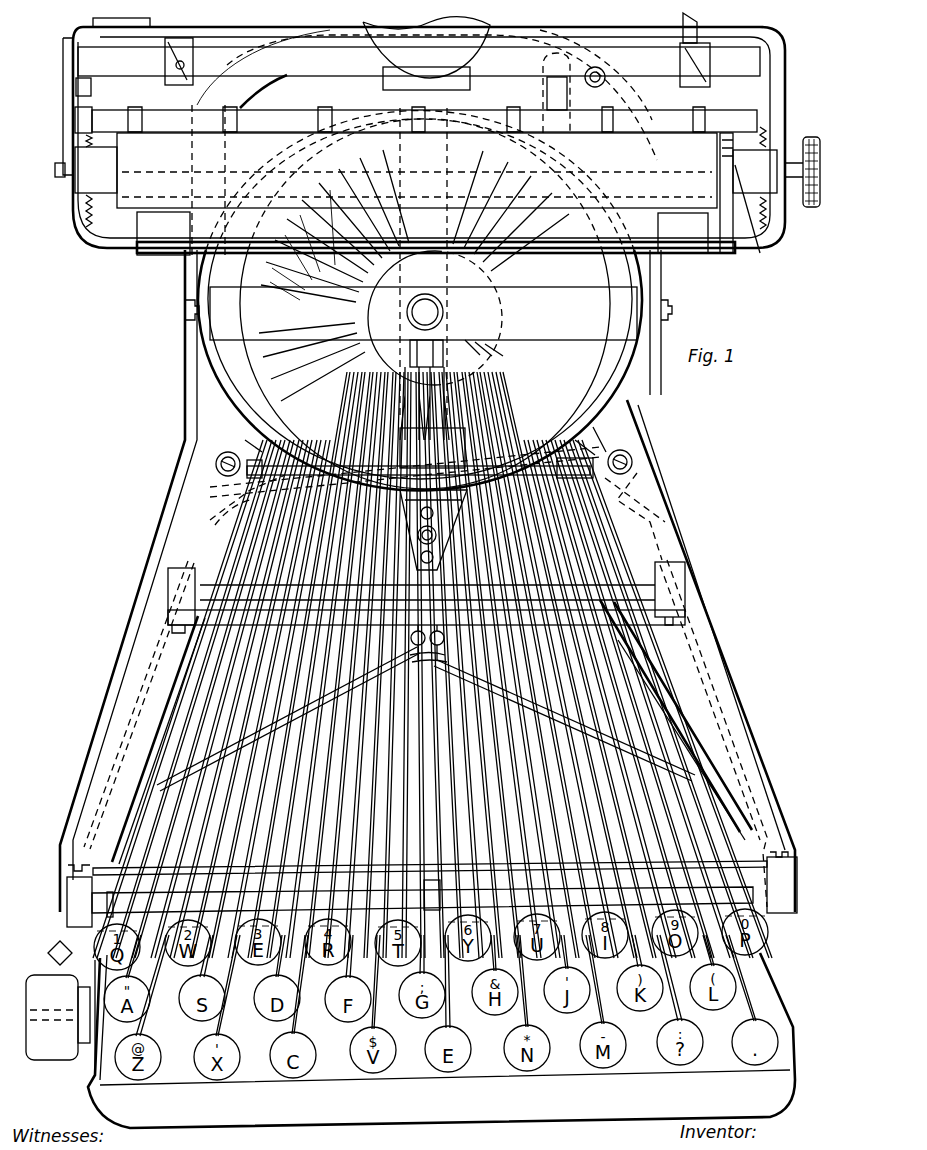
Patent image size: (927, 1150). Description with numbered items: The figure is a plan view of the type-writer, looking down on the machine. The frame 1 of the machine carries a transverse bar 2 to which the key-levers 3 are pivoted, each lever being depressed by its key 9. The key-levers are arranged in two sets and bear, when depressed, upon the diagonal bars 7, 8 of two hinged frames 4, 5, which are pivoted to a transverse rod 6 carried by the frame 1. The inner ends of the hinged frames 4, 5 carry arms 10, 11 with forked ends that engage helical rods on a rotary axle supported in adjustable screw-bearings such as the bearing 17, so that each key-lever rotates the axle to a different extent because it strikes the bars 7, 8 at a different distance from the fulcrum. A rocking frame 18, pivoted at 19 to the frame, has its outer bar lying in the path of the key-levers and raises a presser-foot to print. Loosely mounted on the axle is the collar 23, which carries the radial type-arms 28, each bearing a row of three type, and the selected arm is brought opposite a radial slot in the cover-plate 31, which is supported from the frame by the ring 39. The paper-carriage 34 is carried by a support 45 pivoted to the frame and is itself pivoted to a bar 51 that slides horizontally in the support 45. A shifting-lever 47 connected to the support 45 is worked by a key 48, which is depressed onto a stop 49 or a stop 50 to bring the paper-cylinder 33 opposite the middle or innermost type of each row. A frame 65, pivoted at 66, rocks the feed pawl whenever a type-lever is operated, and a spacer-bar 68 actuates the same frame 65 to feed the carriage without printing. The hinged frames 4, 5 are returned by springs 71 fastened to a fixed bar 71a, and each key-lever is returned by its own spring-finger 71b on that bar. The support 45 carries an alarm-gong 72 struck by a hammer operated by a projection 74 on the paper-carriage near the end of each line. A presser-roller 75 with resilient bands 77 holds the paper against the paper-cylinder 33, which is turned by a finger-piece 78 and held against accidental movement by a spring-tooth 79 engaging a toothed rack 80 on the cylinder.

The frame 1 is at (700, 625).
The transverse bar 2 is at (666, 562).
The key-levers 3 is at (713, 843).
The hinged frame 4 is at (713, 763).
The hinged frame 5 is at (145, 818).
The transverse rod 6 is at (732, 893).
The diagonal bar 7 is at (667, 753).
The diagonal bar 8 is at (210, 755).
The keys 9 is at (345, 1063).
The arm 10 is at (448, 403).
The arm 11 is at (412, 403).
The adjustable screw-bearing 17 is at (443, 312).
The rocking frame 18 is at (441, 464).
The pivot 19 is at (676, 520).
The collar 23 is at (441, 353).
The radial arms 28 is at (270, 387).
The cover-plate 31 is at (529, 257).
The paper-cylinder 33 is at (417, 170).
The paper-carriage 34 is at (785, 70).
The ring 39 is at (248, 362).
The support 45 is at (240, 108).
The shifting-lever 47 is at (150, 623).
The key 48 is at (112, 1033).
The stop 49 is at (72, 1052).
The stop 50 is at (58, 975).
The bar 51 is at (574, 89).
The frame 65 is at (628, 400).
The pivot 66 is at (187, 300).
The spacer-bar 68 is at (441, 1040).
The springs 71 is at (411, 638).
The fixed bar 71a is at (410, 656).
The spring 71b is at (223, 557).
The alarm-gong 72 is at (426, 47).
The projection 74 is at (690, 22).
The presser-roller 75 is at (97, 105).
The resilient bands 77 is at (325, 112).
The finger-piece 78 is at (802, 183).
The spring-tooth 79 is at (742, 190).
The toothed rack 80 is at (735, 148).